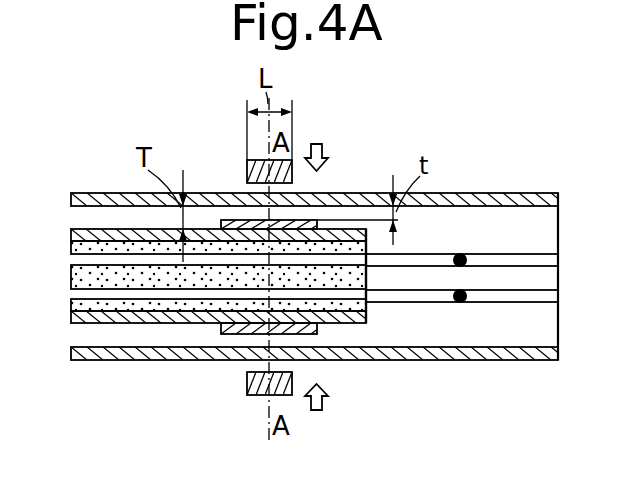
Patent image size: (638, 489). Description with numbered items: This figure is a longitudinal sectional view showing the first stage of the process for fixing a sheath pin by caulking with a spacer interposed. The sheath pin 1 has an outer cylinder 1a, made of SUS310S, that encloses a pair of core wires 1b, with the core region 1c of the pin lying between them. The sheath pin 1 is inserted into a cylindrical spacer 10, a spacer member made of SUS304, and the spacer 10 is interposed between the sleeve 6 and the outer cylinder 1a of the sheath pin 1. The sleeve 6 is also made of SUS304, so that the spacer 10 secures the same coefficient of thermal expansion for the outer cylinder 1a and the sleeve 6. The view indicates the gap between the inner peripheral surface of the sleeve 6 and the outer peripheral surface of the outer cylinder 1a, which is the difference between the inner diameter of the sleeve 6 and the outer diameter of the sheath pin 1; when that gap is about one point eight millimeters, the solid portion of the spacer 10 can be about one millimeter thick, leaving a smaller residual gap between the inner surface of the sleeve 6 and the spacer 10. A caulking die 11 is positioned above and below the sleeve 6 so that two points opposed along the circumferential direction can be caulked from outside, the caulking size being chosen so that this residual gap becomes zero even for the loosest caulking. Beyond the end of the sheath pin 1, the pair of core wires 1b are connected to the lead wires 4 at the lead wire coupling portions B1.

The sheath pin 1 is at (112, 322).
The outer cylinder 1a is at (347, 236).
The core wires 1b is at (445, 295).
The core of inner tube 1c is at (372, 272).
The lead wires 4 is at (540, 297).
The sleeve 6 is at (503, 198).
The spacer 10 is at (312, 330).
The caulking die 11 is at (247, 165).
The lead wire coupling portions B1 is at (468, 297).